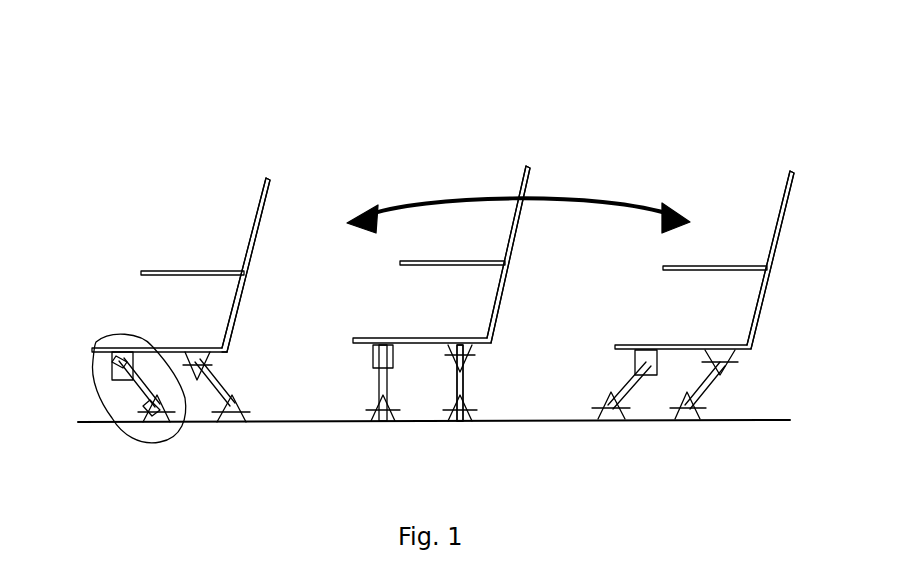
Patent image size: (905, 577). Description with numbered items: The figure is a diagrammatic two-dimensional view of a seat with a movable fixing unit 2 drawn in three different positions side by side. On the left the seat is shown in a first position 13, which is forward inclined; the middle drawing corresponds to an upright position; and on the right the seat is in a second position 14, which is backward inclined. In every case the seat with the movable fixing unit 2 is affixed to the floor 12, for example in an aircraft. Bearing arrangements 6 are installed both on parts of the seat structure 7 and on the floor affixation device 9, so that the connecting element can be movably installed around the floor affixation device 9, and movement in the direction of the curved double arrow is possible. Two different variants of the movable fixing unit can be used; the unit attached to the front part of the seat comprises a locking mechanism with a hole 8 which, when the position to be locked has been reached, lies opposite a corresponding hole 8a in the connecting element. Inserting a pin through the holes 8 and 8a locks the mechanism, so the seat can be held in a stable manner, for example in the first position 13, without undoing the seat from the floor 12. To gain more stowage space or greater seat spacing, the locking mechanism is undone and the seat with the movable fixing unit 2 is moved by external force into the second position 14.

The seat with movable fixing unit 2 is at (108, 156).
The bearing arrangement 6 is at (373, 355).
The seat structure 7 is at (478, 343).
The hole 8 is at (110, 376).
The corresponding hole 8a is at (122, 374).
The floor affixation device 9 is at (470, 408).
The floor 12 is at (747, 425).
The first position 13 is at (262, 232).
The second position 14 is at (775, 195).